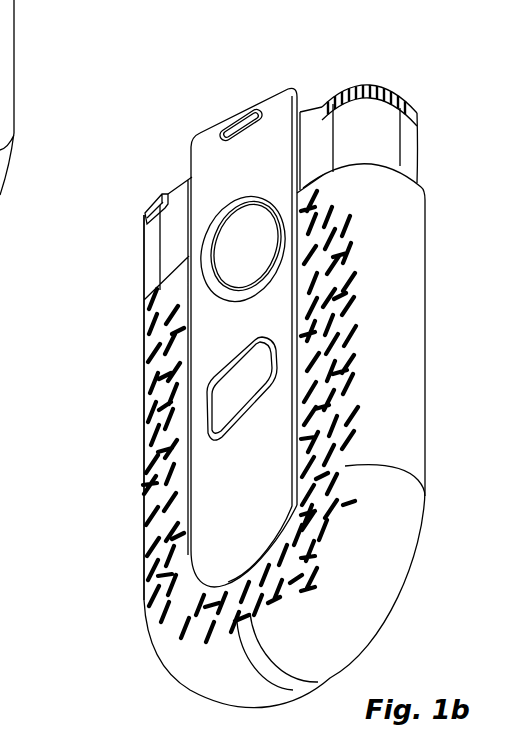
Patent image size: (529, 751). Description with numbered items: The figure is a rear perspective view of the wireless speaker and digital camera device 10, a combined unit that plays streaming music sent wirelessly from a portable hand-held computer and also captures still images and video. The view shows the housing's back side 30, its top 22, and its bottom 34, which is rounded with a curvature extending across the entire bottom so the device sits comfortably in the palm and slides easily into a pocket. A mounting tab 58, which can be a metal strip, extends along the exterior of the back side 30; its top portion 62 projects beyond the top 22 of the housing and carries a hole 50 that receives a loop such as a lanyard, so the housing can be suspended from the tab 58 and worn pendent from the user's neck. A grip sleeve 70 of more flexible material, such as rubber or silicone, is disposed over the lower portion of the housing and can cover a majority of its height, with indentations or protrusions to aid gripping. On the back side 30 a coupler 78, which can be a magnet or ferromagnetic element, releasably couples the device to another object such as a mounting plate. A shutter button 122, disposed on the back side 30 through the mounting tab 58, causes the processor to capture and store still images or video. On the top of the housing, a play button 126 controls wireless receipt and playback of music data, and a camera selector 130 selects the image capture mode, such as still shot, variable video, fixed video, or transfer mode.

The wireless speaker and digital camera device 10 is at (97, 609).
The top 22 is at (313, 108).
The back side 30 is at (160, 240).
The bottom 34 is at (212, 672).
The hole 50 is at (247, 116).
The mounting tab 58 is at (200, 134).
The top portion 62 is at (224, 116).
The grip sleeve 70 is at (412, 312).
The coupler 78 is at (235, 249).
The shutter button 122 is at (228, 397).
The play button 126 is at (147, 203).
The camera selector 130 is at (403, 88).